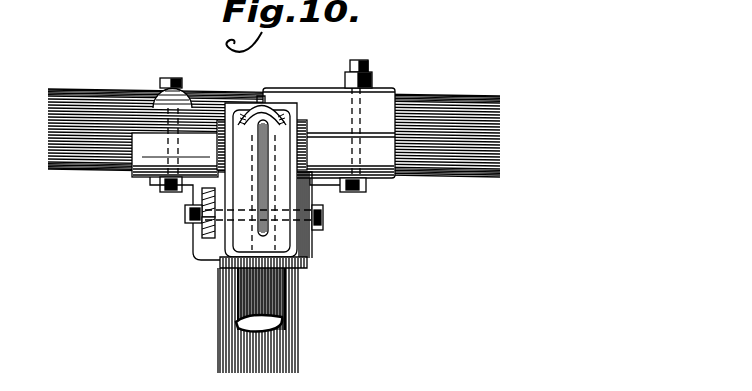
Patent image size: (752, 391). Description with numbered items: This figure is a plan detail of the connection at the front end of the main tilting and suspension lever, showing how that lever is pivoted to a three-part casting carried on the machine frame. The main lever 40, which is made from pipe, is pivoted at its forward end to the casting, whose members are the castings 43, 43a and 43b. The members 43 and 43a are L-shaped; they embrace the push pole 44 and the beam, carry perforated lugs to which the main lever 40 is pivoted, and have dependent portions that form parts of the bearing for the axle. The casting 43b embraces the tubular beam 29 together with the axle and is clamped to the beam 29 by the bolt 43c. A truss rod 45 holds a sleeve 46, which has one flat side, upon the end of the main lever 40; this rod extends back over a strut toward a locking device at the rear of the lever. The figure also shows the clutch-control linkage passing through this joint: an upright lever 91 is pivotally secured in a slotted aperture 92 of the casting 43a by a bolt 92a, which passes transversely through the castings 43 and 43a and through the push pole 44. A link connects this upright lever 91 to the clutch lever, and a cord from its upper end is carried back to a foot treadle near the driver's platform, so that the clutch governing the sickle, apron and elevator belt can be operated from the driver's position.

The tubular beam 29 is at (438, 107).
The casting member 43 is at (326, 178).
The casting member 43a is at (158, 158).
The casting member 43b is at (306, 98).
The bolt 43c is at (372, 115).
The truss rod 45 is at (266, 190).
The sleeve 46 is at (323, 228).
The main lever 40 is at (300, 300).
The push pole 44 is at (232, 337).
The upright lever 91 is at (202, 232).
The slotted aperture 92 is at (204, 240).
The bolt 92a is at (323, 220).